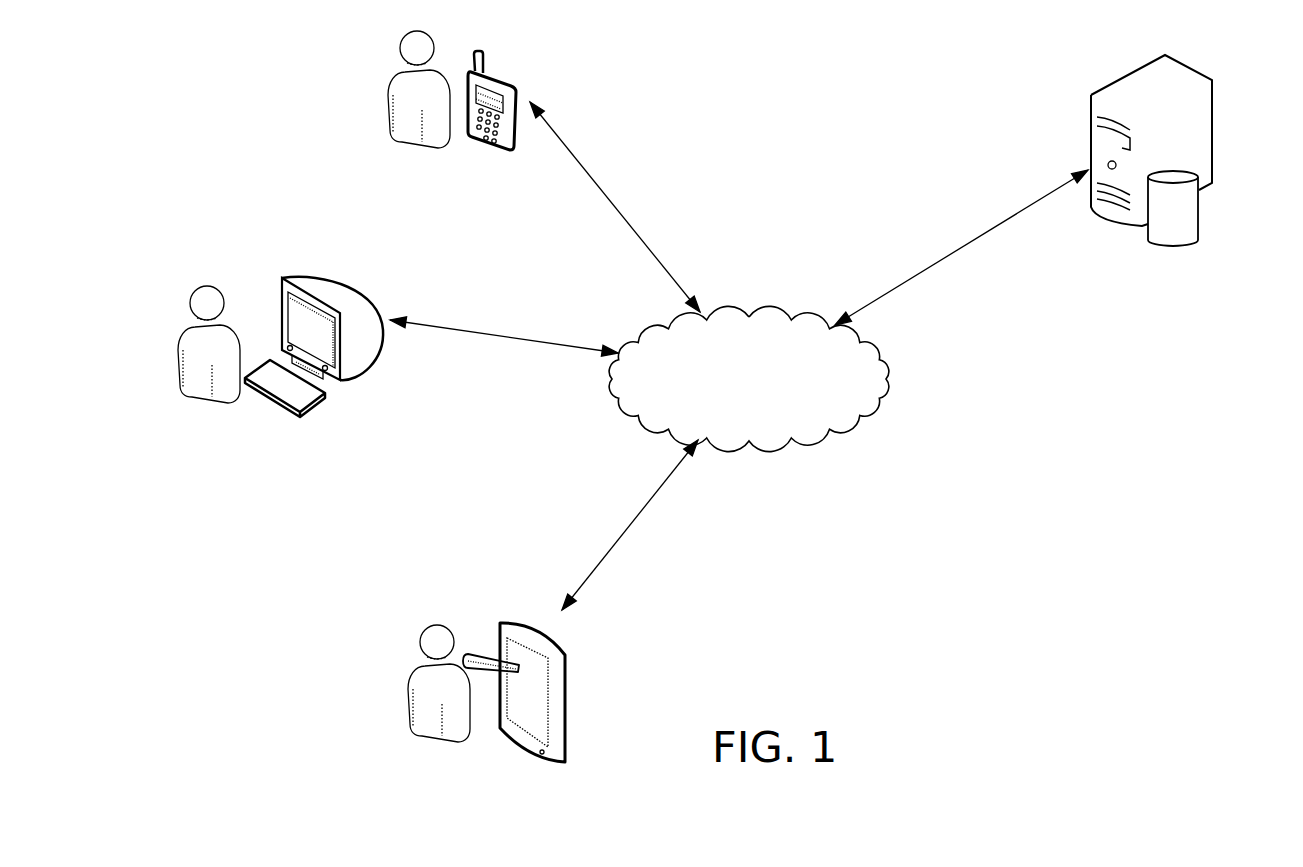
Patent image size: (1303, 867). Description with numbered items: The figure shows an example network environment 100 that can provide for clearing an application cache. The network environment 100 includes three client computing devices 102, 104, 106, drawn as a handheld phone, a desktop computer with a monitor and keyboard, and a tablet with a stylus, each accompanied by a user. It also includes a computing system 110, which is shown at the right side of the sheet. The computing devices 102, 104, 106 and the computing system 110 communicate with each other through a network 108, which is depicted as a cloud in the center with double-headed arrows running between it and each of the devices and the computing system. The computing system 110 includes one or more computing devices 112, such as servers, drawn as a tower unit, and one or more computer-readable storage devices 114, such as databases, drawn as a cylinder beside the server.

The network environment 100 is at (863, 71).
The computing device 102 is at (507, 73).
The computing device 104 is at (355, 290).
The computing device 106 is at (562, 650).
The network 108 is at (747, 312).
The computing system 110 is at (1090, 269).
The computing device 112 is at (1192, 67).
The computer-readable storage device 114 is at (1200, 238).